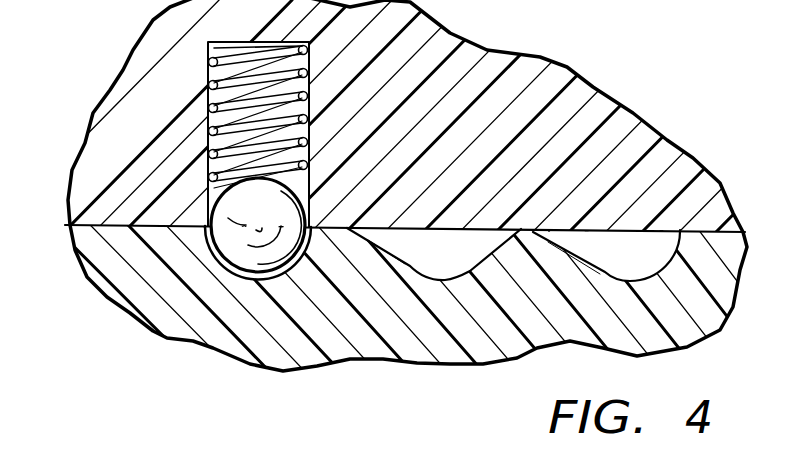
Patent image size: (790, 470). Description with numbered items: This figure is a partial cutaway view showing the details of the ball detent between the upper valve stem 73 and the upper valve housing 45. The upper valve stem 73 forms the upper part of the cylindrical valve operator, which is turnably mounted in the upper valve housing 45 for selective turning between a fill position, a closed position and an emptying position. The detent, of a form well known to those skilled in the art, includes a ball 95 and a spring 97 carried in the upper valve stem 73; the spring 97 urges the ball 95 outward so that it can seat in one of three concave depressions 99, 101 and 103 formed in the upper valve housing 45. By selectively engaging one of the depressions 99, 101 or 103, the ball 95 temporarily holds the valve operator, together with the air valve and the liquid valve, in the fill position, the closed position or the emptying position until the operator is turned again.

The upper valve stem 73 is at (133, 92).
The upper valve housing 45 is at (127, 275).
The ball 95 is at (212, 214).
The spring 97 is at (310, 73).
The concave depression 99 is at (280, 264).
The concave depression 101 is at (460, 266).
The concave depression 103 is at (630, 278).